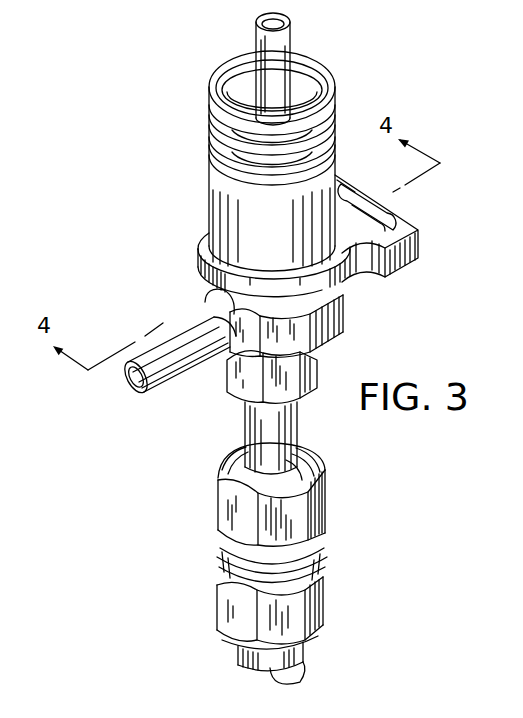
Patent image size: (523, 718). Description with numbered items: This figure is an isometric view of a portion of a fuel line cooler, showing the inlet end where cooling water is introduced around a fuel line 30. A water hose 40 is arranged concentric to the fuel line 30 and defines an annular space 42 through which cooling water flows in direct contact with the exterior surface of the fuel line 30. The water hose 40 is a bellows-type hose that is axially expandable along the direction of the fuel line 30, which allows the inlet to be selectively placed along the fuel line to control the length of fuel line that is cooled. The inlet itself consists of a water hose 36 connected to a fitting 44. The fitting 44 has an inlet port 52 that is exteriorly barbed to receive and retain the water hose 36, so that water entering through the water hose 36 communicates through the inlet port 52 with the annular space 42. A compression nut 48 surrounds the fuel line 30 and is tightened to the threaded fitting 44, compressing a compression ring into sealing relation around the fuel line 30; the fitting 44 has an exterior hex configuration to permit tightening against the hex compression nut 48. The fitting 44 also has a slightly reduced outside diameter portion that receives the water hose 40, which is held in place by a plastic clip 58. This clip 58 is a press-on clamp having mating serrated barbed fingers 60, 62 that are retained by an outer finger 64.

The fuel line 30 is at (268, 18).
The water hose 36 is at (160, 390).
The water hose 40 is at (338, 92).
The annular space 42 is at (306, 58).
The fitting 44 is at (345, 307).
The compression nut 48 is at (318, 368).
The inlet port 52 is at (226, 300).
The plastic clip 58 is at (207, 244).
The serrated barbed finger 60 is at (350, 186).
The serrated barbed finger 62 is at (357, 208).
The outer finger 64 is at (370, 198).